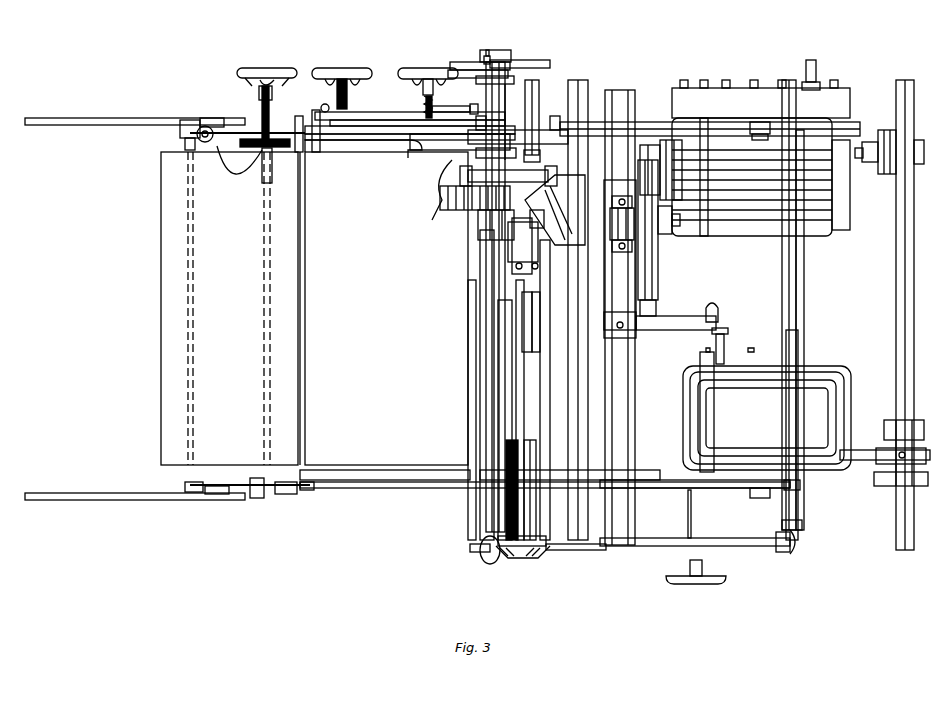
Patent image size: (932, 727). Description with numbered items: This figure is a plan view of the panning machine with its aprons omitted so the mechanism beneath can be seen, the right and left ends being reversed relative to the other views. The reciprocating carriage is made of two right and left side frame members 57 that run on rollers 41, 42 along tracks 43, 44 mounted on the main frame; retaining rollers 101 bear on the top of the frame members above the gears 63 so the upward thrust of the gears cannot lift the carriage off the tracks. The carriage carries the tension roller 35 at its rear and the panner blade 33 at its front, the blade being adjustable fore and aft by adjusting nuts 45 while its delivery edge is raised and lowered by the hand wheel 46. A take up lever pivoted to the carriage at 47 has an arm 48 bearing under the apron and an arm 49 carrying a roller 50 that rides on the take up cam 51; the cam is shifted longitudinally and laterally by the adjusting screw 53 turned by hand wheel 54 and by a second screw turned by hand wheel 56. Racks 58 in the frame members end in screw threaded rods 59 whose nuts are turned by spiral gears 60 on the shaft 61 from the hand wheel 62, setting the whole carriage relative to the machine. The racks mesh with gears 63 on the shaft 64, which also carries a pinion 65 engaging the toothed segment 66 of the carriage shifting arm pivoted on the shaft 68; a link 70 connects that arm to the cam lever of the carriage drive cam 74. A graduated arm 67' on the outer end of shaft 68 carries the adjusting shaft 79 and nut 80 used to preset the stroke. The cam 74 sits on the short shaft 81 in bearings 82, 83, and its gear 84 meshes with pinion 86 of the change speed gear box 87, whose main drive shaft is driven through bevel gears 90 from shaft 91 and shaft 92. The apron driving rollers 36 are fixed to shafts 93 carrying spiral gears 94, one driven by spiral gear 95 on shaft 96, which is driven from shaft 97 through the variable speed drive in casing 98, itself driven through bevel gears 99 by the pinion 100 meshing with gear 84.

The panner blade 33 is at (161, 420).
The tension roller 35 is at (804, 268).
The rollers 36 is at (532, 346).
The rollers 41 is at (223, 120).
The rollers 42 is at (760, 122).
The tracks 43 is at (70, 124).
The tracks 44 is at (645, 108).
The adjusting nuts 45 is at (272, 505).
The hand wheel 46 is at (196, 133).
The pivot 47 is at (316, 113).
The arm 48 is at (380, 470).
The arm 49 is at (380, 126).
The roller 50 is at (472, 106).
The take up cam 51 is at (366, 104).
The adjusting screw 53 is at (420, 104).
The hand wheel 54 is at (420, 50).
The hand wheel 56 is at (358, 50).
The frame members 57 is at (436, 150).
The racks 58 is at (395, 160).
The screw threaded rod 59 is at (296, 117).
The spiral gears 60 is at (254, 134).
The shaft 61 is at (262, 98).
The hand wheel 62 is at (266, 60).
The gears 63 is at (551, 120).
The shaft 64 is at (540, 100).
The pinion 65 is at (478, 204).
The toothed segment 66 is at (440, 198).
The graduated arm 67' is at (499, 60).
The shaft 68 is at (508, 80).
The link 70 is at (466, 172).
The carriage drive cam 74 is at (575, 262).
The adjusting shaft 79 is at (506, 60).
The nut 80 is at (488, 56).
The short shaft 81 is at (678, 222).
The bearings 82 is at (634, 250).
The bearings 83 is at (522, 278).
The gear 84 is at (658, 284).
The pinion 86 is at (655, 120).
The change speed gear box 87 is at (754, 172).
The bevel gears 90 is at (878, 150).
The shaft 91 is at (922, 372).
The shaft 92 is at (896, 262).
The shafts 93 is at (532, 512).
The spiral gears 94 is at (530, 560).
The spiral gear 95 is at (494, 566).
The shaft 96 is at (626, 570).
The shaft 97 is at (800, 514).
The casing 98 is at (738, 378).
The bevel gears 99 is at (720, 314).
The pinion 100 is at (650, 332).
The retaining rollers 101 is at (486, 484).